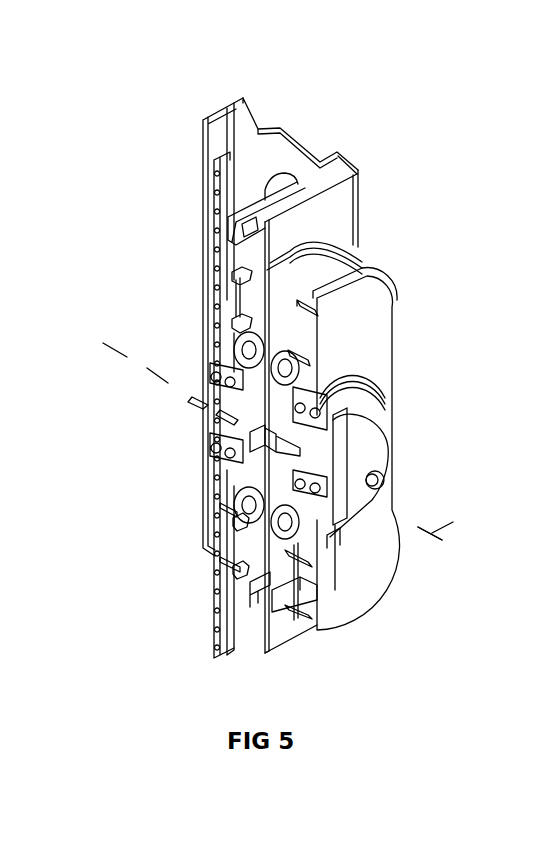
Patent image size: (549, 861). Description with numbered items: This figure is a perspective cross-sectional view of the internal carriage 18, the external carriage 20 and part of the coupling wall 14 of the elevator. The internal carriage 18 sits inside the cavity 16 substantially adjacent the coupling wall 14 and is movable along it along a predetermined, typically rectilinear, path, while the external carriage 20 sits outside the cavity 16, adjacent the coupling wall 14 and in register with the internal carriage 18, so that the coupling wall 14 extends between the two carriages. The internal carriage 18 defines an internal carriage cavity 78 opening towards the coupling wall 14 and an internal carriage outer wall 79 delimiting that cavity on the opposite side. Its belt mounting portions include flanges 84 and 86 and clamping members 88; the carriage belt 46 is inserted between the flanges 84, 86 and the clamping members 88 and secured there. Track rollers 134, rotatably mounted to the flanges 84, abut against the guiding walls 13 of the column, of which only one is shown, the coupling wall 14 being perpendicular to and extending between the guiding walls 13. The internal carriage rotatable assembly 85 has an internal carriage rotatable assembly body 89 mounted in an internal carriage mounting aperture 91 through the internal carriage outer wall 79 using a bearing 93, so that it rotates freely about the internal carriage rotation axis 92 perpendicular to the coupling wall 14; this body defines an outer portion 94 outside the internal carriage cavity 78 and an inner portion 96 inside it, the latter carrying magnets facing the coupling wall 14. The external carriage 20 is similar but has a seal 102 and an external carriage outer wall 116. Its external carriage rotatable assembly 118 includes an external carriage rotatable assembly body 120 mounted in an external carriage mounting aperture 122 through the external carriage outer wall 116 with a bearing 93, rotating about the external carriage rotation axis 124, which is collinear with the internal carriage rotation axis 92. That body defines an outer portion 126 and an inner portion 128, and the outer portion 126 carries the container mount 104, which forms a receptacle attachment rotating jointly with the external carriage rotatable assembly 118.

The guiding wall 13 is at (242, 379).
The coupling wall 14 is at (343, 213).
The cavity 16 is at (280, 147).
The internal carriage 18 is at (205, 500).
The external carriage 20 is at (377, 271).
The carriage belt 46 is at (220, 206).
The internal carriage cavity 78 is at (234, 270).
The internal carriage outer wall 79 is at (222, 488).
The flange 84 is at (262, 205).
The internal carriage rotatable assembly 85 is at (188, 416).
The flange 86 is at (240, 600).
The clamping member 88 is at (210, 266).
The internal carriage rotatable assembly body 89 is at (203, 427).
The internal carriage mounting aperture 91 is at (228, 360).
The internal carriage rotation axis 92 is at (467, 513).
The bearing 93 is at (220, 443).
The internal carriage rotatable assembly body outer portion 94 is at (212, 395).
The internal carriage rotatable assembly body inner portion 96 is at (222, 530).
The seal 102 is at (345, 241).
The container mount 104 is at (385, 475).
The external carriage outer wall 116 is at (355, 331).
The external carriage rotatable assembly 118 is at (385, 421).
The external carriage rotatable assembly body 120 is at (353, 519).
The external carriage mounting aperture 122 is at (362, 400).
The external carriage rotation axis 124 is at (467, 513).
The external carriage rotatable assembly body outer portion 126 is at (340, 513).
The external carriage rotatable assembly body inner portion 128 is at (277, 590).
The track roller 134 is at (313, 188).